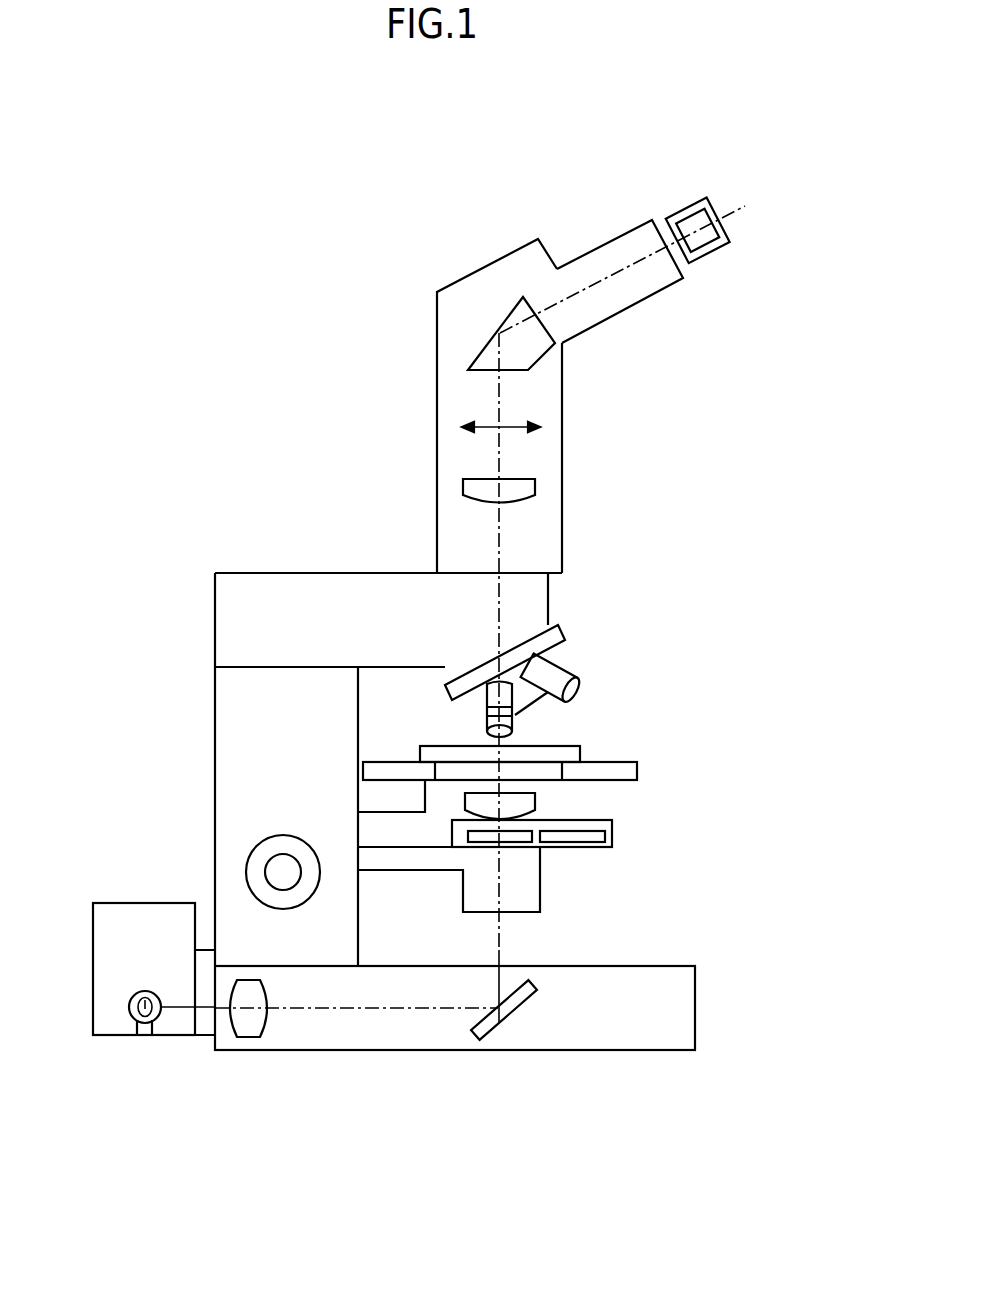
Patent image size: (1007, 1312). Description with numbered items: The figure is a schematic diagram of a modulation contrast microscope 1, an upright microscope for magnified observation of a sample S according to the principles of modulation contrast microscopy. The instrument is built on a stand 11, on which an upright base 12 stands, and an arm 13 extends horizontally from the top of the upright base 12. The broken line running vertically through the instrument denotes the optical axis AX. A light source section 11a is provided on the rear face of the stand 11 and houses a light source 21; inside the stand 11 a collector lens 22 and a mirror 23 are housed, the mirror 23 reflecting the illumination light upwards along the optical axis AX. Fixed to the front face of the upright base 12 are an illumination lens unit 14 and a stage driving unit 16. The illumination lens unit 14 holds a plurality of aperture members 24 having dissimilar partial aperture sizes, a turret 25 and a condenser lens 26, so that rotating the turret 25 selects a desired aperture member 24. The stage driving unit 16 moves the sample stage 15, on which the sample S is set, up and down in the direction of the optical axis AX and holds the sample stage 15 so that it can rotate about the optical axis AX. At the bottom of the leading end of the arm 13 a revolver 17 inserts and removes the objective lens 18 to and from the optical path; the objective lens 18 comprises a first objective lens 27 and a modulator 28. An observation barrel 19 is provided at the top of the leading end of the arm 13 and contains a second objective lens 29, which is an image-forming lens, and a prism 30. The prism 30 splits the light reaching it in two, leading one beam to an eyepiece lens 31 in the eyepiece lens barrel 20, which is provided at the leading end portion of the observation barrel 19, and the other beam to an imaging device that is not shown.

The modulation contrast microscope 1 is at (684, 1132).
The stand 11 is at (632, 1041).
The light source section 11a is at (142, 903).
The upright base 12 is at (215, 731).
The arm 13 is at (273, 593).
The illumination lens unit 14 is at (402, 870).
The sample stage 15 is at (637, 771).
The stage driving unit 16 is at (365, 793).
The revolver 17 is at (560, 628).
The objective lens 18 is at (529, 710).
The observation barrel 19 is at (437, 456).
The eyepiece lens barrel 20 is at (613, 235).
The light source 21 is at (147, 1036).
The collector lens 22 is at (248, 1037).
The mirror 23 is at (500, 1034).
The aperture members 24 is at (577, 840).
The turret 25 is at (577, 873).
The condenser lens 26 is at (535, 801).
The first objective lens 27 is at (487, 735).
The modulator 28 is at (560, 672).
The second objective lens 29 is at (535, 490).
The prism 30 is at (540, 358).
The eyepiece lens 31 is at (712, 252).
The sample S is at (580, 752).
The optical axis AX is at (487, 613).